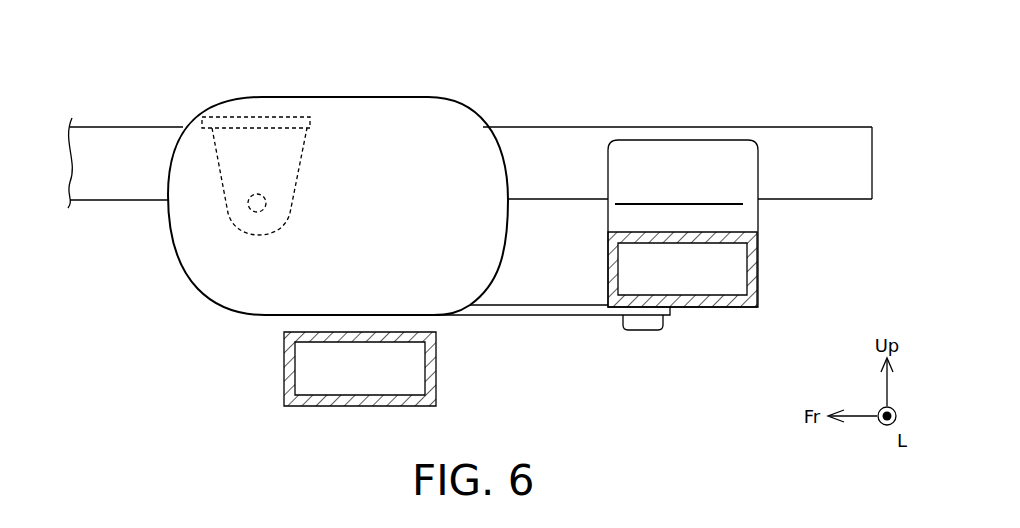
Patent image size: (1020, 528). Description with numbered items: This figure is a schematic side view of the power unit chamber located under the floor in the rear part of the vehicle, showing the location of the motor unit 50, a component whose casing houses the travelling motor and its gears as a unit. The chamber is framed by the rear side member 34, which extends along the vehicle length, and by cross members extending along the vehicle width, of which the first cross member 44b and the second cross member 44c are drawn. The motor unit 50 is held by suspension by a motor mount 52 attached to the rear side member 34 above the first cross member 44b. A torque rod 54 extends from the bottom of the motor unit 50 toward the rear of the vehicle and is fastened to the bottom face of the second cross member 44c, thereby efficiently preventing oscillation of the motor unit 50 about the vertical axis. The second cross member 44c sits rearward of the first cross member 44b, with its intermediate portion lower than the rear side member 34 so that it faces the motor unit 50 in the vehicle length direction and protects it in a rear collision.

The rear side member 34 is at (802, 137).
The motor unit 50 is at (345, 97).
The motor mount 52 is at (218, 175).
The first cross member 44b is at (284, 372).
The second cross member 44c is at (757, 262).
The torque rod 54 is at (537, 318).